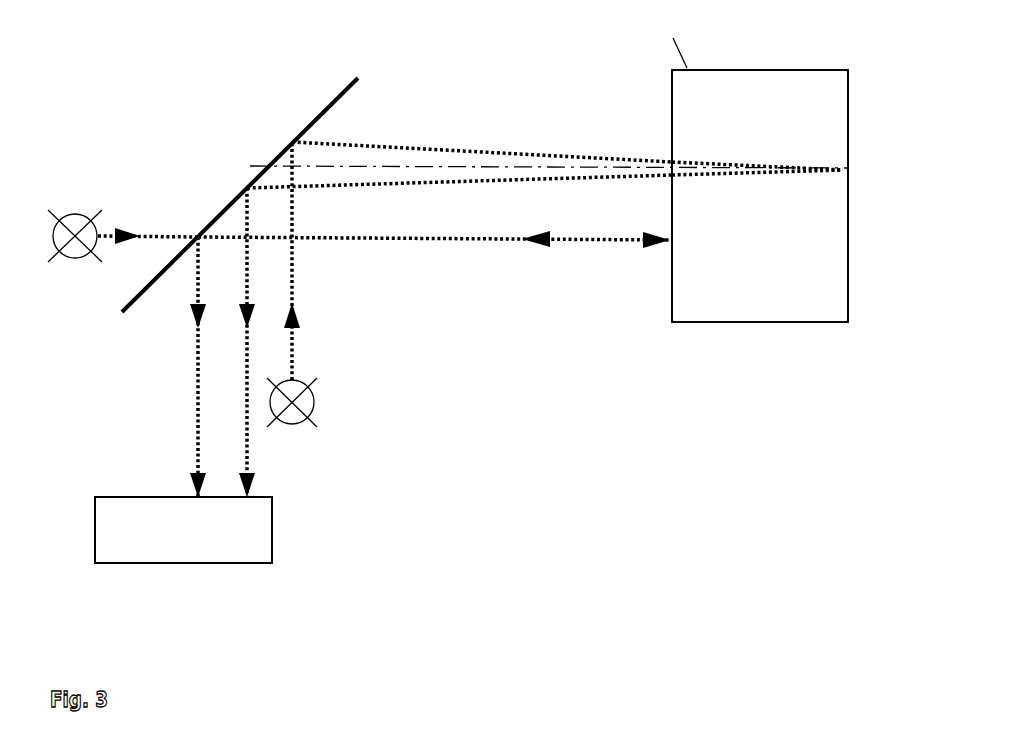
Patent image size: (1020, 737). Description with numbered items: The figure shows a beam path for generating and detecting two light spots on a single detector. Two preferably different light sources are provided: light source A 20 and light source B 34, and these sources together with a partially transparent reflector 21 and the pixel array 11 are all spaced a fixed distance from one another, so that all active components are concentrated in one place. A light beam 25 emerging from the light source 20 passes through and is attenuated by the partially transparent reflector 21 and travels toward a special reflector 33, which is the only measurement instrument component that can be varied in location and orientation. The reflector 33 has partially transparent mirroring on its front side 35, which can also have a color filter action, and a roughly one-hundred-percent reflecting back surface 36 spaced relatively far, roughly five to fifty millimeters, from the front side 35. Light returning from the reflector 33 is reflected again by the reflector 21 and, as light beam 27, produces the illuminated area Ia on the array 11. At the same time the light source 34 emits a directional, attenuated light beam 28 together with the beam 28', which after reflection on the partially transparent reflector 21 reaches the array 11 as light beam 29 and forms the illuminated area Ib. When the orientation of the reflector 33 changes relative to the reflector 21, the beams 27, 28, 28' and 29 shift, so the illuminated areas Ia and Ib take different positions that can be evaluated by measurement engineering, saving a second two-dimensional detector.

The optoelectronic array 11 is at (95, 530).
The light source A 20 is at (70, 258).
The partially transparent reflector 21 is at (323, 108).
The light beam 25 is at (165, 233).
The light beam 27 is at (197, 393).
The light beam 28 is at (459, 133).
The light beam 28' is at (482, 120).
The light beam 29 is at (250, 433).
The special reflector 33 is at (670, 93).
The light source B 34 is at (303, 380).
The front side 35 is at (672, 240).
The reflecting back surface 36 is at (843, 170).